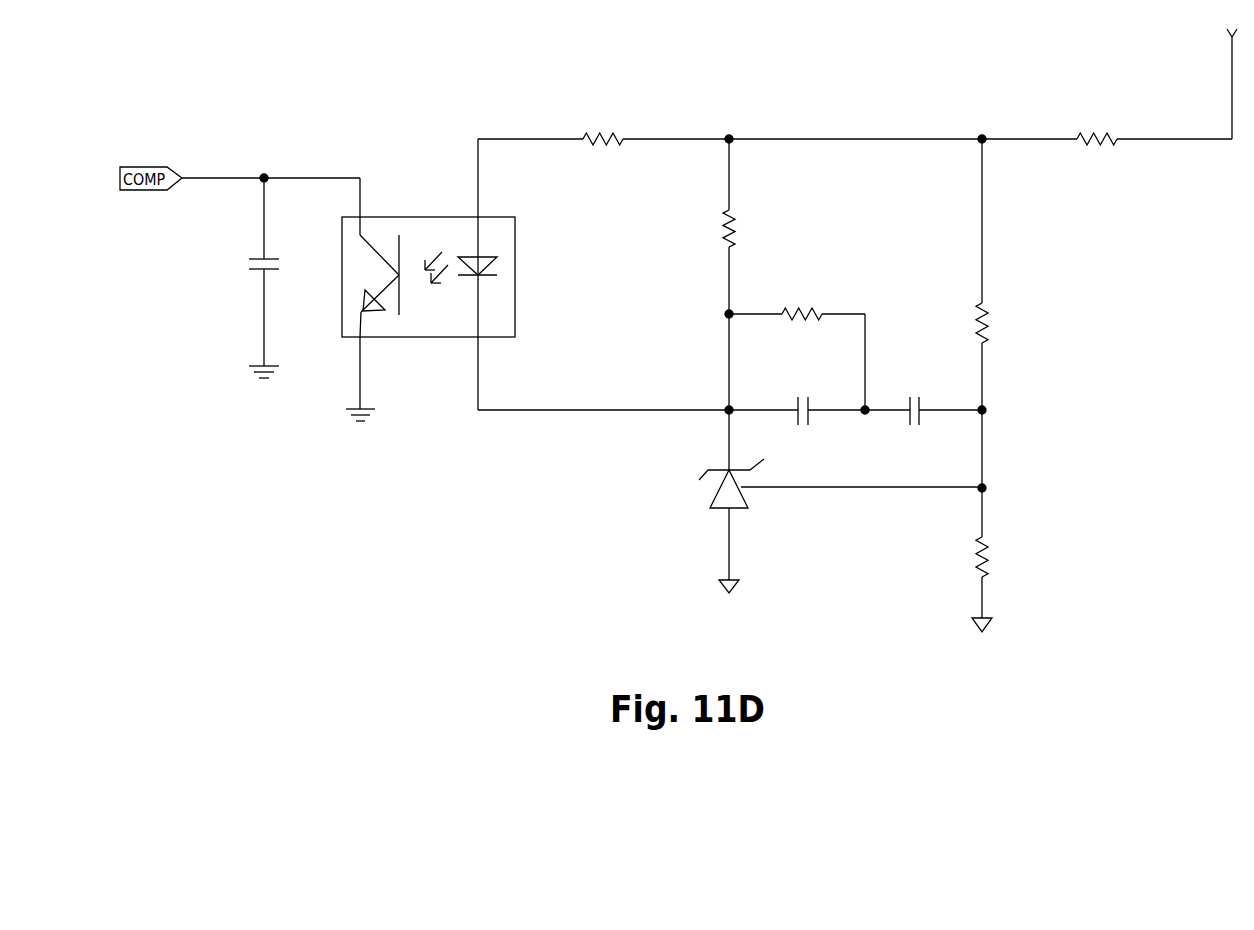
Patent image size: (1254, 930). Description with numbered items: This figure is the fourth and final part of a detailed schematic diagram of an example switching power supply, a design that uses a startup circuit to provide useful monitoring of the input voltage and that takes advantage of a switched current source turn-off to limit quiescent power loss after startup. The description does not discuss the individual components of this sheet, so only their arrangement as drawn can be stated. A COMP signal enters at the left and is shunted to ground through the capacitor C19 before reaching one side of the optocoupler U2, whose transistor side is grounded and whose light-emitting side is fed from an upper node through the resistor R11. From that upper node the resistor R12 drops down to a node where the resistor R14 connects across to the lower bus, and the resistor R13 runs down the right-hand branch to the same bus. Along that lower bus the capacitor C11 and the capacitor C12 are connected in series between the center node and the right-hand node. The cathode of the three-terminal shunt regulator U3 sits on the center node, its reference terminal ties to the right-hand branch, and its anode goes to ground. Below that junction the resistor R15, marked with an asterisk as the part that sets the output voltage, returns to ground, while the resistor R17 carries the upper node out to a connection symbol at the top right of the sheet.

The compensation capacitor 1000pF C19 is at (222, 278).
The optocoupler SFH617A-3X006T U2 is at (514, 274).
The resistor 680 ohm R11 is at (603, 139).
The resistor 1.50K R12 is at (764, 228).
The resistor 75.0K R13 is at (1017, 326).
The resistor 22.1K R14 is at (806, 316).
The resistor setting Vout R15 is at (1102, 572).
The resistor 0R R17 is at (1097, 138).
The capacitor 100pF C11 is at (799, 411).
The capacitor 0.22uF C12 is at (916, 411).
The shunt regulator TL431CDBZ SOT-23 U3 is at (681, 501).